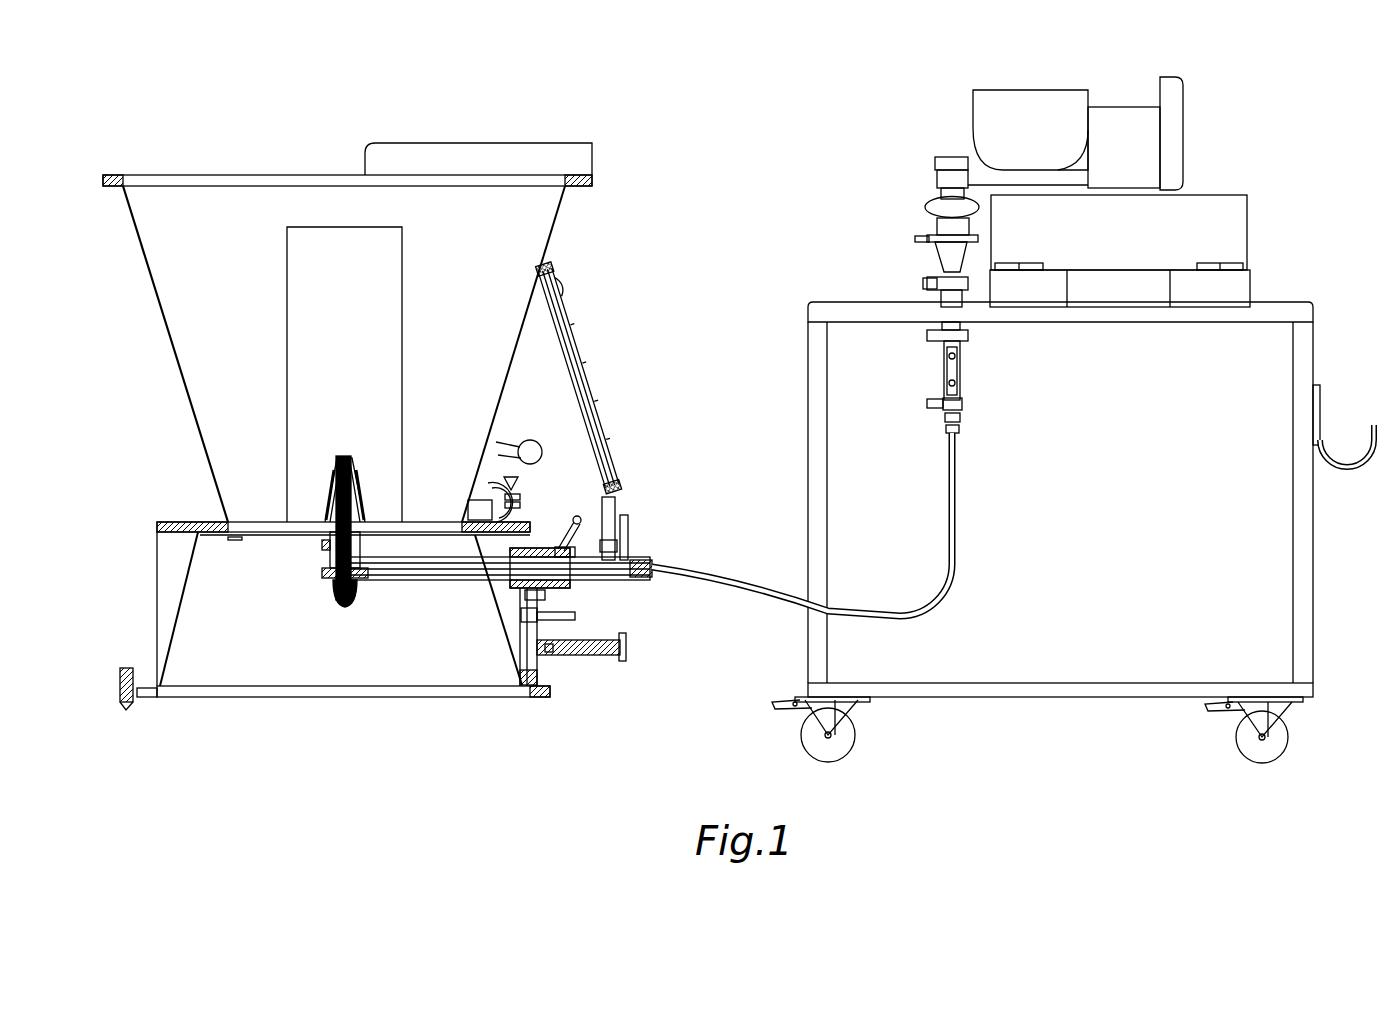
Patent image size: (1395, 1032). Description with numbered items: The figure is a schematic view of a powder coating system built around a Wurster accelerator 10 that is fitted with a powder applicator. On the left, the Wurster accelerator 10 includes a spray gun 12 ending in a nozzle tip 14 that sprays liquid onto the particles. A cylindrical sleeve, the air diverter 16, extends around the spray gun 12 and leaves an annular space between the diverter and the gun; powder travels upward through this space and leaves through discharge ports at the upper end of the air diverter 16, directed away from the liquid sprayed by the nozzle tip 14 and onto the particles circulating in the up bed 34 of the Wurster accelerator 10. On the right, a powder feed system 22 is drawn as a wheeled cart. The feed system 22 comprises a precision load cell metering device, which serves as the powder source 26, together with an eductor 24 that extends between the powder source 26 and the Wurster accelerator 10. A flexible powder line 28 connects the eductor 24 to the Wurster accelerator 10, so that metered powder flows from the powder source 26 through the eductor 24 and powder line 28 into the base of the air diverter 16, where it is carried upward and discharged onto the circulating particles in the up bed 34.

The Wurster accelerator 10 is at (541, 400).
The spray gun 12 is at (330, 503).
The nozzle tip 14 is at (345, 456).
The air diverter 16 is at (335, 470).
The powder feed system 22 is at (870, 210).
The eductor 24 is at (962, 372).
The powder source 26 is at (1008, 100).
The powder line 28 is at (932, 600).
The up bed 34 is at (383, 404).